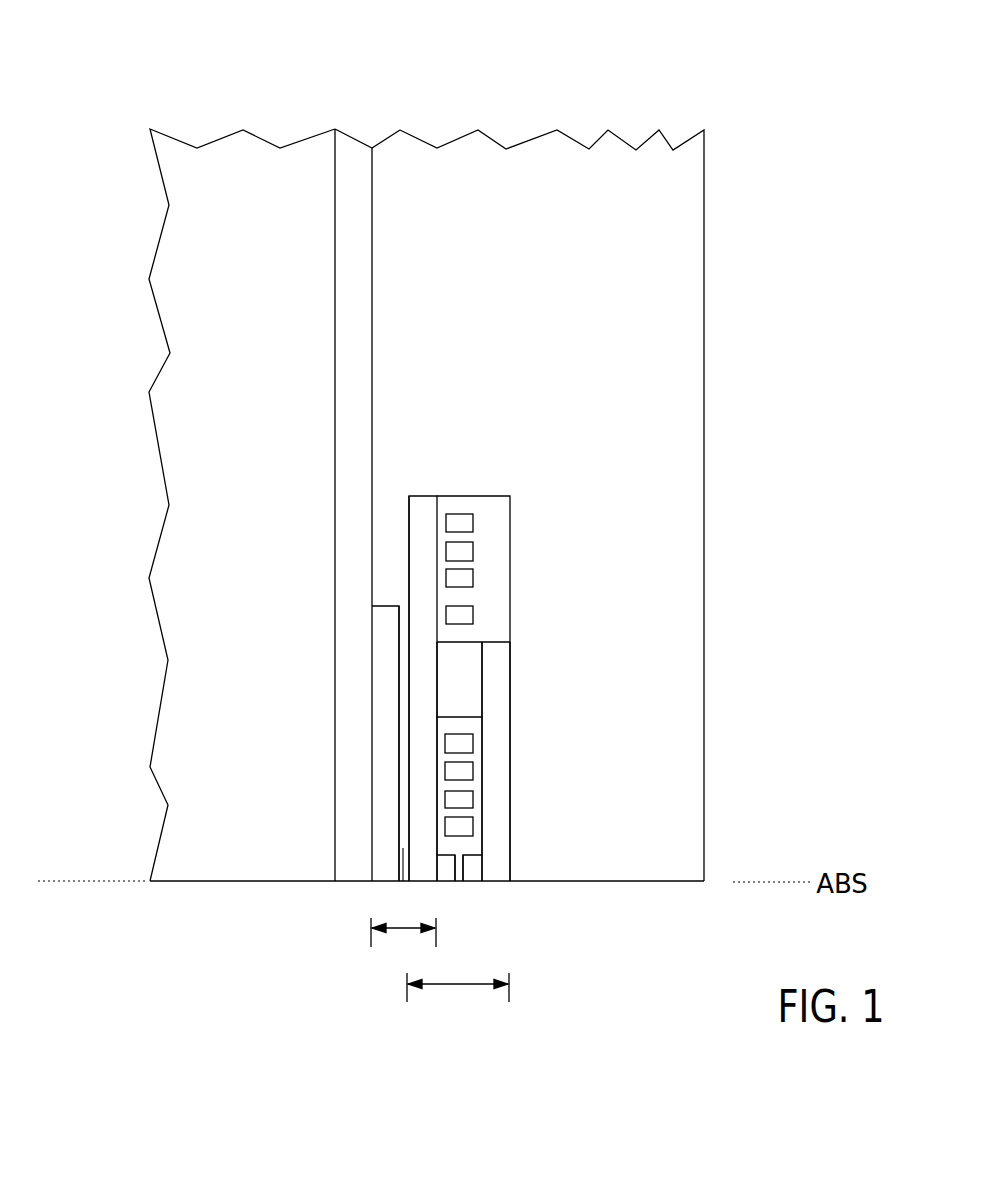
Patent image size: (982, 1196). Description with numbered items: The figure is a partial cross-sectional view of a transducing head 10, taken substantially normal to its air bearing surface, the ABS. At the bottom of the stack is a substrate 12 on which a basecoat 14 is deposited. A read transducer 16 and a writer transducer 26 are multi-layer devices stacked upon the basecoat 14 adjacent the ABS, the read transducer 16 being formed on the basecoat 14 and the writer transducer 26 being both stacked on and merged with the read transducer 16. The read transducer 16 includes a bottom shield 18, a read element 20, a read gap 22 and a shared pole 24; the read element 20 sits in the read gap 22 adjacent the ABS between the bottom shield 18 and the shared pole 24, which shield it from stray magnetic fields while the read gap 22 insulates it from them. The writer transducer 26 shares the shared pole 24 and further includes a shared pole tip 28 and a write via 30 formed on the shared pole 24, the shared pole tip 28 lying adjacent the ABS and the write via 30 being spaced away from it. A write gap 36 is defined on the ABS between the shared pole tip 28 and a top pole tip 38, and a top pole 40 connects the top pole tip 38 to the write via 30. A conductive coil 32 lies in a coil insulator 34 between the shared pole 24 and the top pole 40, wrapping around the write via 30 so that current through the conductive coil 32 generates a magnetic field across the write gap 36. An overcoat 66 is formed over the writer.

The transducing head 10 is at (816, 77).
The substrate 12 is at (223, 789).
The basecoat 14 is at (354, 818).
The read transducer 16 is at (403, 946).
The bottom shield 18 is at (390, 782).
The read element 20 is at (402, 882).
The read gap 22 is at (404, 730).
The shared pole 24 is at (418, 688).
The writer transducer 26 is at (458, 1002).
The shared pole tip 28 is at (445, 873).
The write via 30 is at (447, 680).
The conductive coil 32 is at (455, 615).
The coil insulator 34 is at (472, 845).
The write gap 36 is at (458, 869).
The top pole tip 38 is at (472, 872).
The top pole 40 is at (490, 835).
The overcoat 66 is at (647, 792).